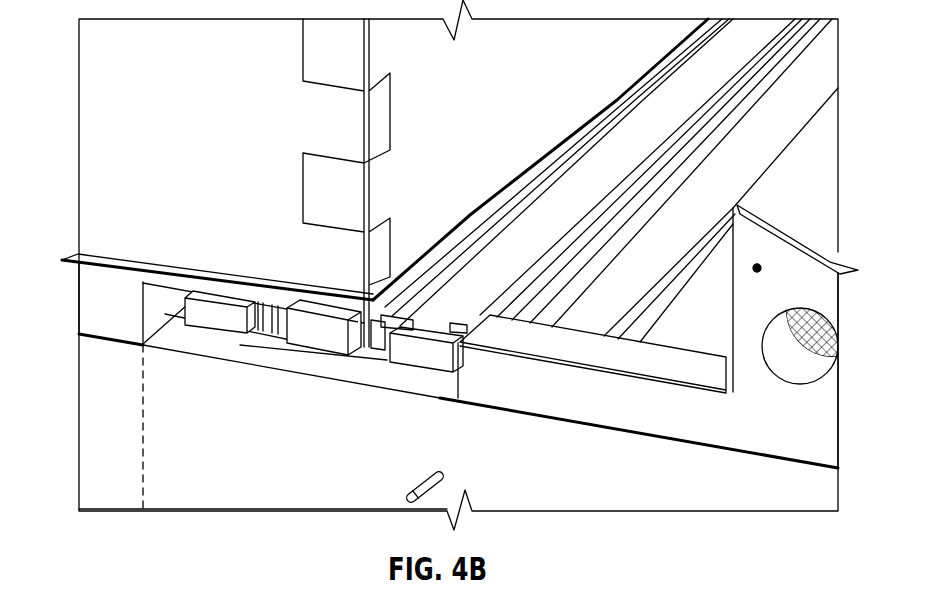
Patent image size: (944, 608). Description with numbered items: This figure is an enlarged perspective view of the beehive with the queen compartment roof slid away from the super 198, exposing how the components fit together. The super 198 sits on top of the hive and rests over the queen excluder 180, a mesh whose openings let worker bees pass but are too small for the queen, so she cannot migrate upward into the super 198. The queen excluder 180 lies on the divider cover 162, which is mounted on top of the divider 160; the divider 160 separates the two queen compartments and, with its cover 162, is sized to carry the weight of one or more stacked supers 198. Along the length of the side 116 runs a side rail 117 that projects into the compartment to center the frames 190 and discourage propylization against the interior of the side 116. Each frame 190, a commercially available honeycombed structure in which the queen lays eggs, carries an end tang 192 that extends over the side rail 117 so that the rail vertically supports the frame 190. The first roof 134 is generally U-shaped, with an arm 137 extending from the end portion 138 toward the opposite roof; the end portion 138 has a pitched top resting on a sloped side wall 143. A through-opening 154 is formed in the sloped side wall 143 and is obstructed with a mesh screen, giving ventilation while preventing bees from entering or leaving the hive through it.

The super 198 is at (189, 94).
The queen excluder 180 is at (137, 272).
The divider cover 162 is at (97, 290).
The divider 160 is at (100, 423).
The frame 190 is at (323, 340).
The side rail 117 is at (345, 380).
The end tang 192 is at (425, 350).
The arm 137 is at (545, 402).
The side 116 is at (215, 488).
The first roof 134 is at (777, 248).
The end portion 138 is at (815, 278).
The through-opening 154 is at (797, 377).
The sloped side wall 143 is at (823, 428).